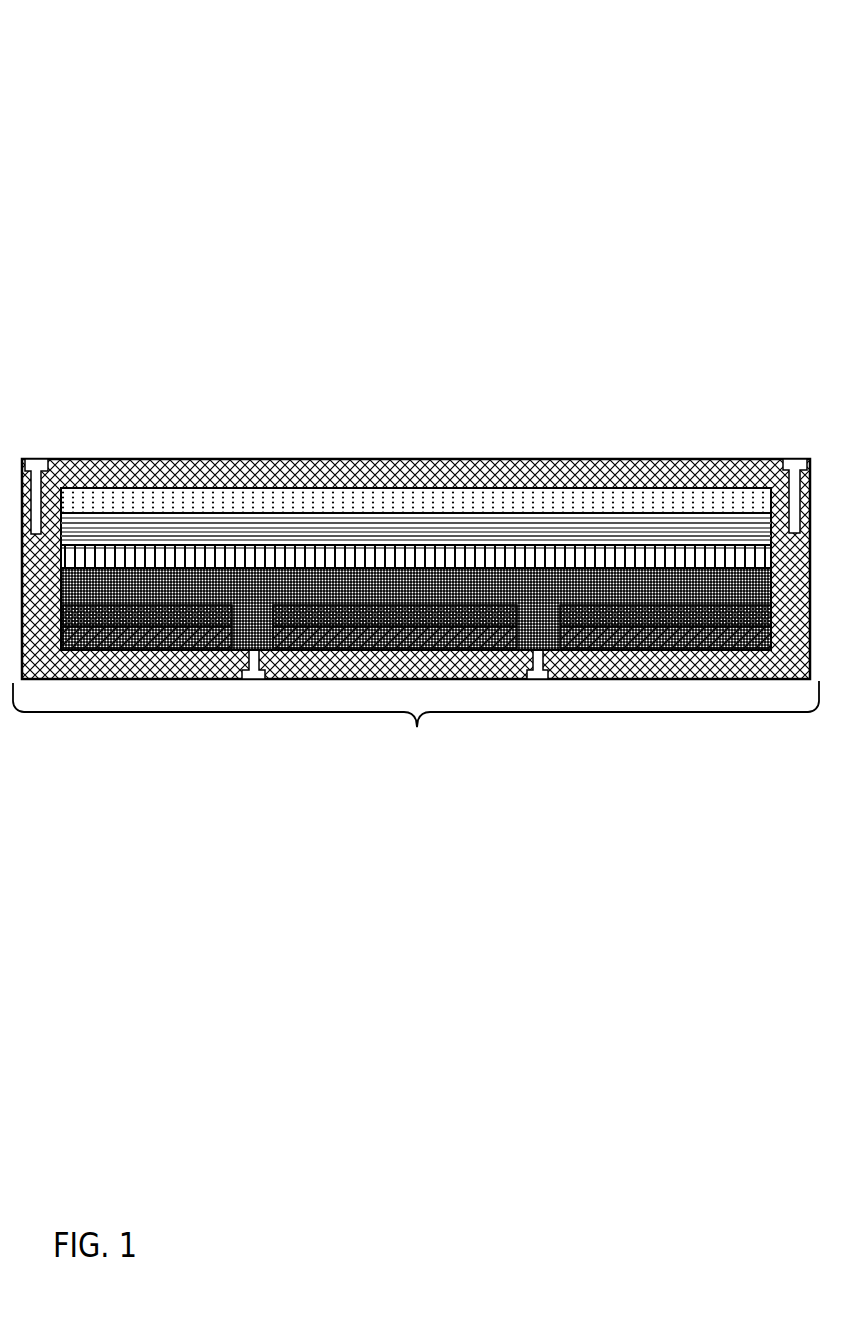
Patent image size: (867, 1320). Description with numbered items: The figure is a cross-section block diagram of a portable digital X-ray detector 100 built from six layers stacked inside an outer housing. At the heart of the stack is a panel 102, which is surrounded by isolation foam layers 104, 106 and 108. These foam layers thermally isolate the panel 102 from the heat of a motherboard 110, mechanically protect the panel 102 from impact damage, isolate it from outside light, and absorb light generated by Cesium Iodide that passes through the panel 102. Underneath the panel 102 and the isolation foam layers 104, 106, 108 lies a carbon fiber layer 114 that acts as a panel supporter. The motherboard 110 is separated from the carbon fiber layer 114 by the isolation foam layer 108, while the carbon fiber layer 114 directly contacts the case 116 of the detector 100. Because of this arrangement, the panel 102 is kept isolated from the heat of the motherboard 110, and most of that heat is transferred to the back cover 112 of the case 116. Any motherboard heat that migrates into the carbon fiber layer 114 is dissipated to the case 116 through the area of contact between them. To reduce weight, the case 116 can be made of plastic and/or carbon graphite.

The portable digital X-ray detector 100 is at (792, 41).
The panel 102 is at (477, 544).
The isolation foam layer 104 is at (537, 514).
The isolation foam layer 106 is at (537, 572).
The isolation foam layer 108 is at (737, 624).
The motherboard 110 is at (735, 648).
The back cover 112 is at (416, 720).
The carbon fiber layer 114 is at (565, 600).
The case 116 is at (468, 486).